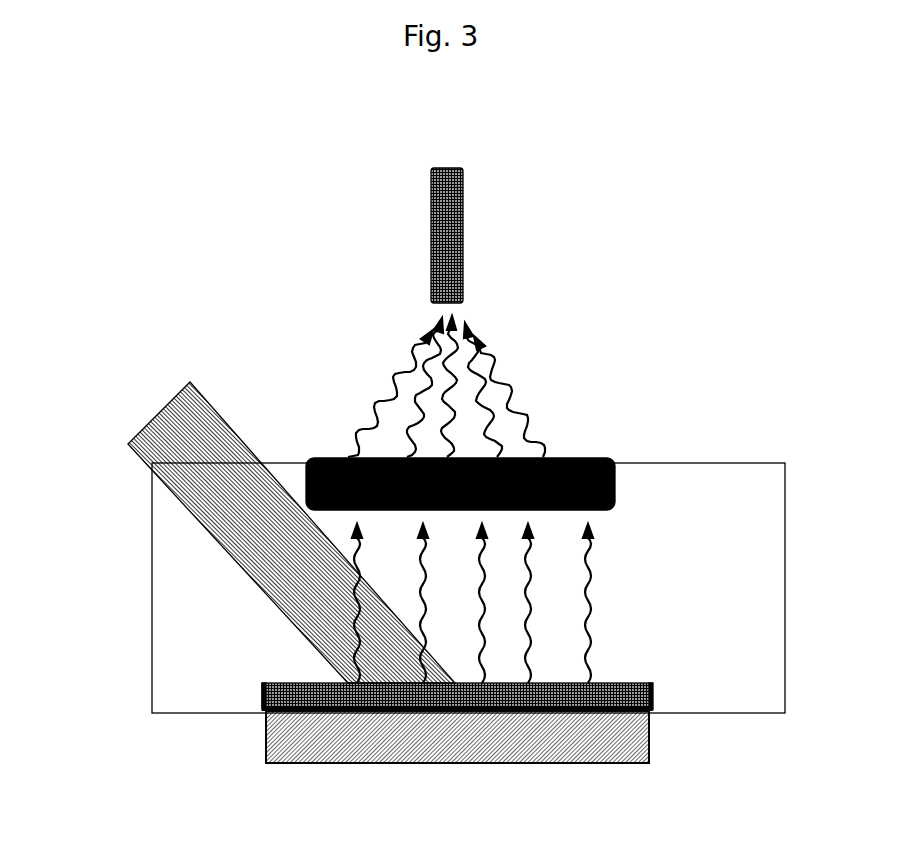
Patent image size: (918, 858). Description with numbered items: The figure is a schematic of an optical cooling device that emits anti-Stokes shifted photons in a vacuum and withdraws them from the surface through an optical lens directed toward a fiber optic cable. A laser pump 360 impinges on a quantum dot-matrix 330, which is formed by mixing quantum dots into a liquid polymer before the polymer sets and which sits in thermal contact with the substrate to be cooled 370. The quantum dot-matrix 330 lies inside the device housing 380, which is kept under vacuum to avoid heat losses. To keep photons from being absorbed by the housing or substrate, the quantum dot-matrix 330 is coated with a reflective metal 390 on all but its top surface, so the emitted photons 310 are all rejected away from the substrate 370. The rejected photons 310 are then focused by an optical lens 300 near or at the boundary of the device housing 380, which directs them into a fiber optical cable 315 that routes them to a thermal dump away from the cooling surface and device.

The optical lens 300 is at (575, 447).
The emitted photons 310 is at (598, 596).
The fiber optical cable 315 is at (475, 253).
The quantum dot-matrix 330 is at (334, 680).
The laser pump 360 is at (147, 410).
The substrate to be cooled 370 is at (480, 765).
The device housing 380 is at (720, 720).
The reflective metal 390 is at (260, 705).